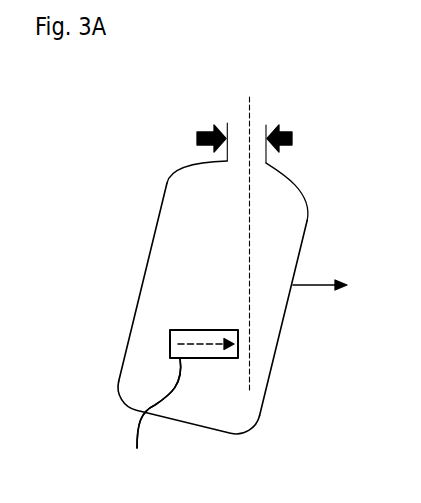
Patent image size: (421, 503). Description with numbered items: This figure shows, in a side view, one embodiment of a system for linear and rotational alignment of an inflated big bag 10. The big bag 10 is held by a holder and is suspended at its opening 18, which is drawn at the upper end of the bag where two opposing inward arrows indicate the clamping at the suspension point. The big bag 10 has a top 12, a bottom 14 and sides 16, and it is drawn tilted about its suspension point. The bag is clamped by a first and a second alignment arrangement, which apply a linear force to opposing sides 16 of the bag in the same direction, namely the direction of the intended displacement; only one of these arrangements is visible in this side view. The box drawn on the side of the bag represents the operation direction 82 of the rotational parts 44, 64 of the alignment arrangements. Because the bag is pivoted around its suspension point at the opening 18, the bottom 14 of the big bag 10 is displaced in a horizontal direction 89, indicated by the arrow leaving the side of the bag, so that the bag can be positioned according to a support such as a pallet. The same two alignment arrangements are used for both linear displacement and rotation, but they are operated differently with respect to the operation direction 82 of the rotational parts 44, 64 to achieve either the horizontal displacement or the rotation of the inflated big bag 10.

The inflated big bag 10 is at (180, 222).
The top 12 is at (293, 181).
The bottom 14 is at (188, 425).
The sides 16 is at (138, 309).
The opening 18 is at (237, 125).
The operation direction 82 is at (215, 330).
The horizontal direction 89 is at (310, 285).
The rotational part 44 is at (144, 424).
The rotational part 64 is at (144, 424).